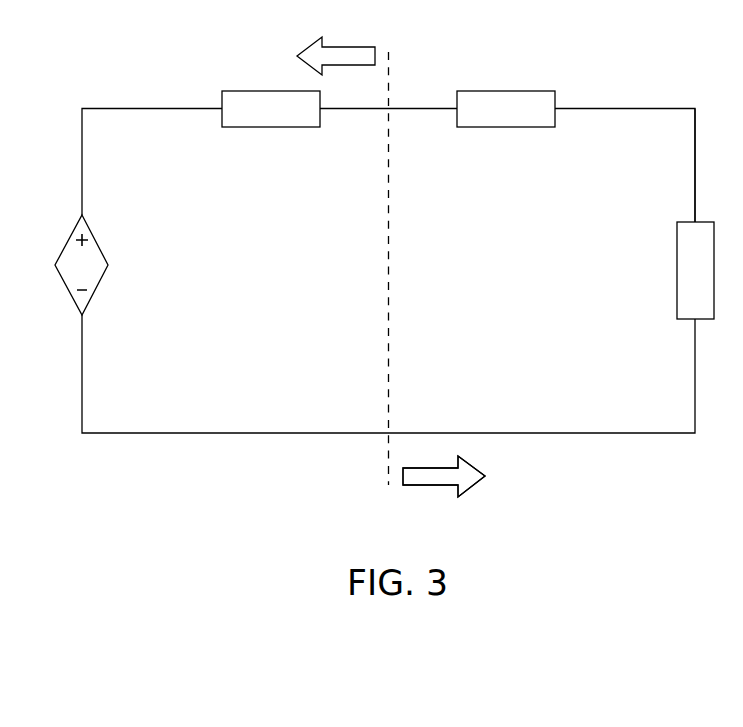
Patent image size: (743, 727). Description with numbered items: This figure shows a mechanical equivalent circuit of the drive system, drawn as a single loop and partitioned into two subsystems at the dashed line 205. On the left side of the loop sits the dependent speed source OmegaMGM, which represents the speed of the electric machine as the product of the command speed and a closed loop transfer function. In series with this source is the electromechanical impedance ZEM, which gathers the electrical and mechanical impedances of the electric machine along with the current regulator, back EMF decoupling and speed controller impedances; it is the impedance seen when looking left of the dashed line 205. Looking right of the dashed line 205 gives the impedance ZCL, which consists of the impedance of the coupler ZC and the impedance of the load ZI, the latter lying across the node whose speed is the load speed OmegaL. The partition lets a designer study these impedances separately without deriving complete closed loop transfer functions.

The dashed line 205 is at (436, 252).
The electromechanical impedance ZEM is at (268, 127).
The impedance of the coupler ZC is at (503, 127).
The impedance of the load ZI is at (677, 280).
The impedance looking right of the dashed line ZCL is at (476, 479).
The speed of the load OmegaL is at (708, 147).
The dependent speed source OmegaMGM is at (103, 272).